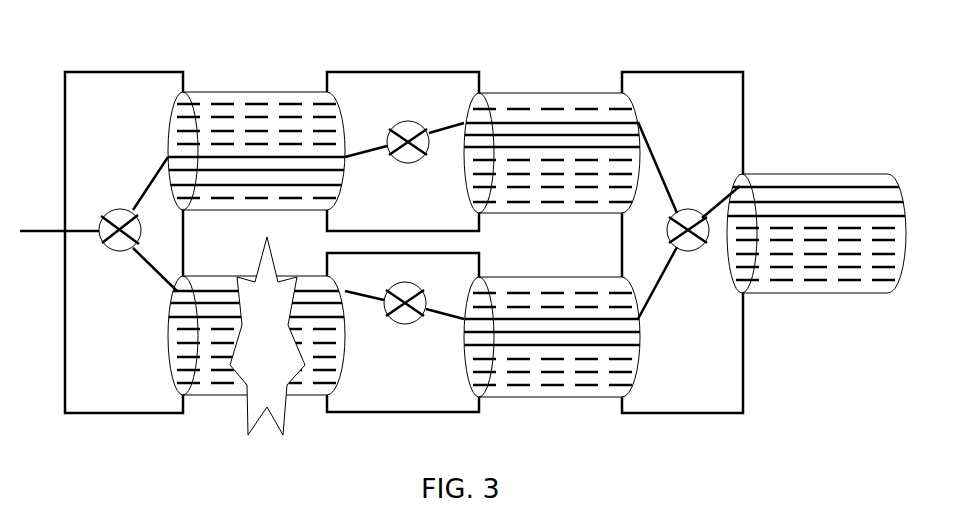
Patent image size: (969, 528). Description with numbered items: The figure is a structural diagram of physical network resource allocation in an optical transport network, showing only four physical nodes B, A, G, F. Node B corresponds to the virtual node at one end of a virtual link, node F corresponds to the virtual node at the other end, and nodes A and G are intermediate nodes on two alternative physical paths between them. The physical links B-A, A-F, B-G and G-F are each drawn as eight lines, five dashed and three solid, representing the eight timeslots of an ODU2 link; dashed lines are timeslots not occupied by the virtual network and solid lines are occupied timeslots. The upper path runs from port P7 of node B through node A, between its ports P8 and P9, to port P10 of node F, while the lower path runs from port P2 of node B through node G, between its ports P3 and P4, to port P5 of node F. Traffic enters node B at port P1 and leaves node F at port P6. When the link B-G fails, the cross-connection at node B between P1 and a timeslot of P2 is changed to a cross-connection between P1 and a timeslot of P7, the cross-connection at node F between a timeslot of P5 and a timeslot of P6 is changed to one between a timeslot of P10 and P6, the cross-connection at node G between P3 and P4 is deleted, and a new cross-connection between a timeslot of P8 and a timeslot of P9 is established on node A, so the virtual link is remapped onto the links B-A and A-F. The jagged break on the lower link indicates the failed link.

The port P1 is at (59, 253).
The port P2 is at (256, 337).
The port P3 is at (339, 364).
The port P4 is at (533, 357).
The port P5 is at (632, 342).
The port P6 is at (804, 213).
The port P7 is at (239, 191).
The port P8 is at (338, 196).
The port P9 is at (534, 170).
The port P10 is at (622, 184).
The physical node B is at (124, 242).
The physical node A is at (403, 151).
The physical node G is at (403, 332).
The physical node F is at (682, 242).